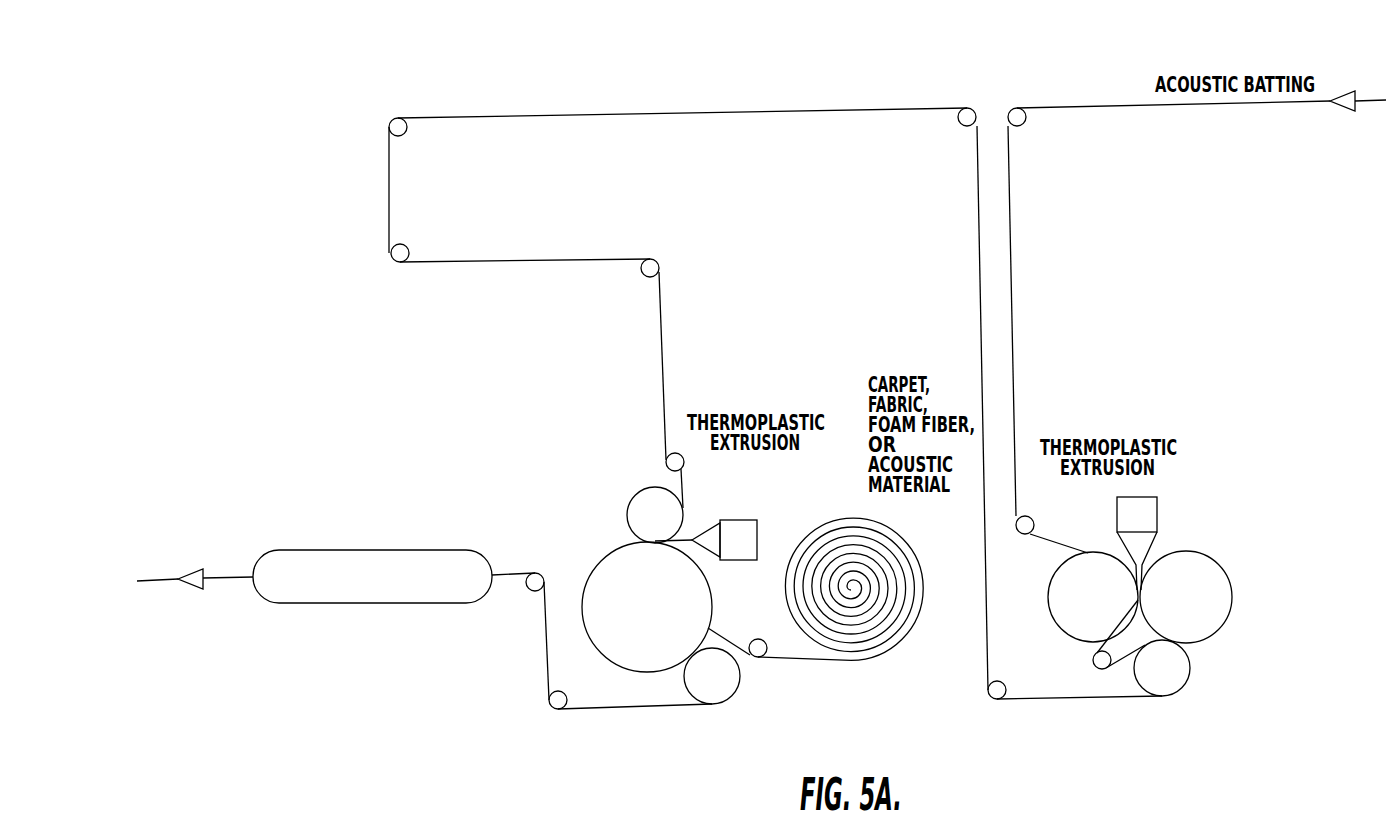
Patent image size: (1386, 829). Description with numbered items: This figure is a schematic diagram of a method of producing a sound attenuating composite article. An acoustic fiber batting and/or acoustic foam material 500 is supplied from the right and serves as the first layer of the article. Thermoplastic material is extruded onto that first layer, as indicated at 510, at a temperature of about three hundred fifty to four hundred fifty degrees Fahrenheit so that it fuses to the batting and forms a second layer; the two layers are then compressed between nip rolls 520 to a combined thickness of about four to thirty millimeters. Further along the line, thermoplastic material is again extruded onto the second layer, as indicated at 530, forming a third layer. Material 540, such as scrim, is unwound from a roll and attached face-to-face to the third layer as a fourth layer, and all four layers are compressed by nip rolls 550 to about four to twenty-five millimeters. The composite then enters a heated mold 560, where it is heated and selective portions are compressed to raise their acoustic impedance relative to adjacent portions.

The acoustic fiber batting and/or acoustic foam material 500 is at (1213, 104).
The thermoplastic material extrusion 510 is at (1157, 515).
The nip rolls 520 is at (1232, 593).
The thermoplastic material extrusion 530 is at (738, 520).
The scrim material 540 is at (742, 630).
The nip rolls 550 is at (656, 487).
The heated mold 560 is at (357, 545).